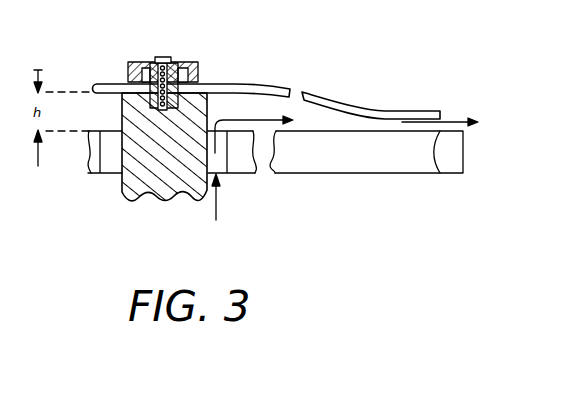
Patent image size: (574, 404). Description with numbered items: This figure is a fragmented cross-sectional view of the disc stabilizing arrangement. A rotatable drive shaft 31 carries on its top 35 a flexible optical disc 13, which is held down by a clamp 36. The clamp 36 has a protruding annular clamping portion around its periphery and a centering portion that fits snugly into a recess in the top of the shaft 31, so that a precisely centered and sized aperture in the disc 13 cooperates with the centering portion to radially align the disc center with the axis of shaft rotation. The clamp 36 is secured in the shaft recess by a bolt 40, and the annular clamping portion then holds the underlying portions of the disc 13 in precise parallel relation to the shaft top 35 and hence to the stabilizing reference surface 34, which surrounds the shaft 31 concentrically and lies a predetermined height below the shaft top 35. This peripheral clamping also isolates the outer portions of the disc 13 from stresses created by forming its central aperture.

The optical disc 13 is at (257, 80).
The drive shaft 31 is at (129, 180).
The stabilizing reference surface 34 is at (248, 175).
The top of the drive shaft 35 is at (209, 96).
The clamp 36 is at (138, 63).
The bolt 40 is at (165, 57).